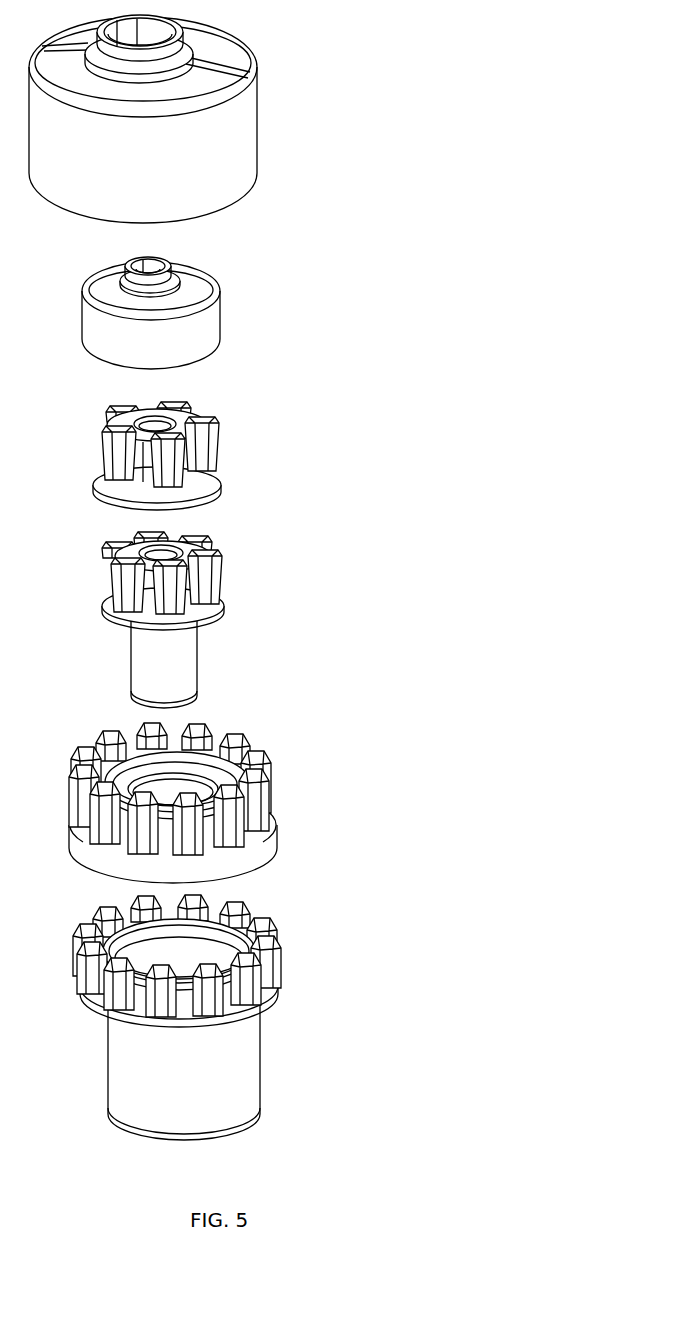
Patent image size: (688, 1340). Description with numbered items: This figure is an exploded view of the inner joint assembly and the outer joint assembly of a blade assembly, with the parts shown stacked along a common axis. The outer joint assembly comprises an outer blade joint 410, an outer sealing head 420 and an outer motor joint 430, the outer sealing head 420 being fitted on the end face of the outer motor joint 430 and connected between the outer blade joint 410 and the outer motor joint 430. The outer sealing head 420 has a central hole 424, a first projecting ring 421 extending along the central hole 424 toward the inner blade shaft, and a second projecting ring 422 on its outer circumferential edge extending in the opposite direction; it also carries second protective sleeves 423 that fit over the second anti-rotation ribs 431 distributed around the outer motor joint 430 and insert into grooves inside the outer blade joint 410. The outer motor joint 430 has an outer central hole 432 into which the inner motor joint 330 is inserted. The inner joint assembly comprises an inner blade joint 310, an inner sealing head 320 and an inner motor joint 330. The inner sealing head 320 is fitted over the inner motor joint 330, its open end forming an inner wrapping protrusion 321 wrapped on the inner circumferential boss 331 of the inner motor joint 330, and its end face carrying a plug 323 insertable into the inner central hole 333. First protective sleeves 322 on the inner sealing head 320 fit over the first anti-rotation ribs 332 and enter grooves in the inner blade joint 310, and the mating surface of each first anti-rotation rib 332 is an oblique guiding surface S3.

The outer blade joint 410 is at (170, 173).
The inner blade joint 310 is at (175, 335).
The inner sealing head 320 is at (244, 437).
The inner wrapping protrusion 321 is at (200, 488).
The first protective sleeve 322 is at (207, 438).
The plug 323 is at (183, 418).
The guiding surface S3 is at (140, 468).
The inner motor joint 330 is at (283, 620).
The inner circumferential boss 331 is at (157, 622).
The first anti-rotation rib 332 is at (215, 587).
The inner central hole 333 is at (163, 557).
The outer sealing head 420 is at (292, 803).
The first projecting ring 421 is at (243, 775).
The second projecting ring 422 is at (250, 853).
The second protective sleeve 423 is at (266, 792).
The central hole 424 is at (173, 792).
The outer motor joint 430 is at (269, 1017).
The second anti-rotation rib 431 is at (247, 977).
The outer central hole 432 is at (185, 960).